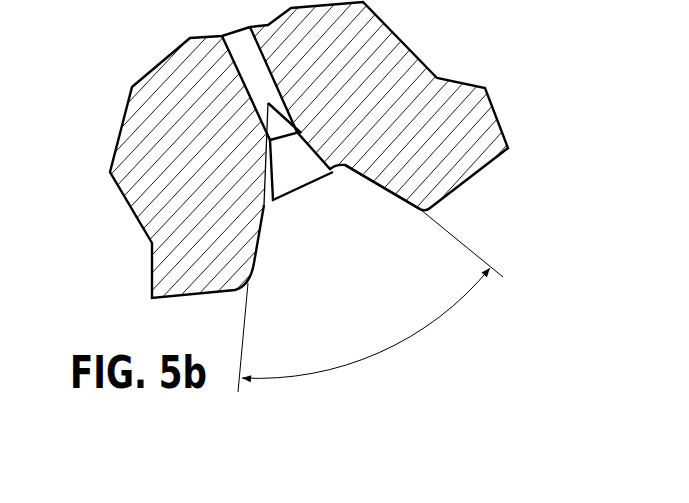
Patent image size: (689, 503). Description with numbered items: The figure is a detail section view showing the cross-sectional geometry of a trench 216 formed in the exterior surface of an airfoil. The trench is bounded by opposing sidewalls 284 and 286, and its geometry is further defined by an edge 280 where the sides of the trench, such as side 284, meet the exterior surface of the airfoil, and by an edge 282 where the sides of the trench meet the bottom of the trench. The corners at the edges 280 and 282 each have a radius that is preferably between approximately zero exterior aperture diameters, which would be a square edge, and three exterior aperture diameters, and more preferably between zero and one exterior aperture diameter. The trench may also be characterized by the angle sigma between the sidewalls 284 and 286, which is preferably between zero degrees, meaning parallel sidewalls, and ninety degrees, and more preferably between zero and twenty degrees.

The cutting edge 216 is at (349, 293).
The edge 280 is at (248, 284).
The edge 282 is at (347, 168).
The side 284 is at (382, 190).
The sidewall 286 is at (256, 243).